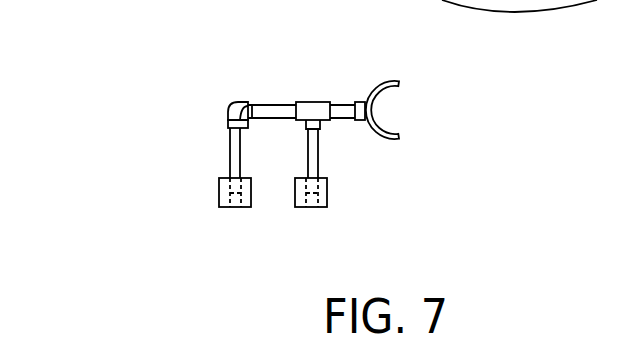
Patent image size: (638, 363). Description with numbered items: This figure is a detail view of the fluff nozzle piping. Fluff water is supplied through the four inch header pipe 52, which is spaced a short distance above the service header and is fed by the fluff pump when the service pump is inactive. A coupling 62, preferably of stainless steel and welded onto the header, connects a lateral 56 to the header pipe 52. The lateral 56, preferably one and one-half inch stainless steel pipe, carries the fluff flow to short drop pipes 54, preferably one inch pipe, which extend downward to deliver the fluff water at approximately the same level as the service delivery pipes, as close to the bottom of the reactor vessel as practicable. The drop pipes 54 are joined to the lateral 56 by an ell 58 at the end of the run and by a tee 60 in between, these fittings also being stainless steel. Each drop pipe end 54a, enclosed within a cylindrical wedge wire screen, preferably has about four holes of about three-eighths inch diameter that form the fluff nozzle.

The fluff header pipe 52 is at (385, 88).
The drop pipe 54 is at (233, 152).
The drop pipe end 54a is at (327, 193).
The lateral 56 is at (345, 103).
The ell 58 is at (227, 115).
The tee 60 is at (305, 122).
The coupling 62 is at (363, 100).